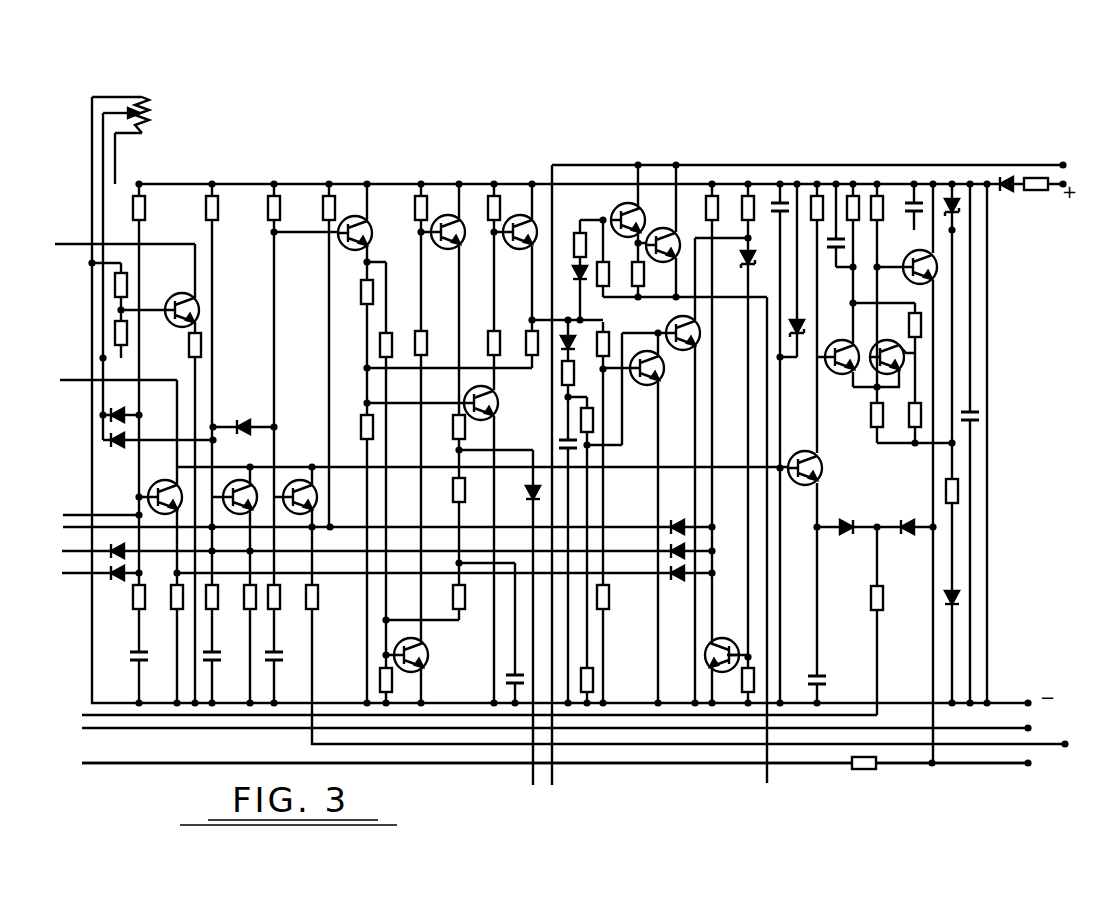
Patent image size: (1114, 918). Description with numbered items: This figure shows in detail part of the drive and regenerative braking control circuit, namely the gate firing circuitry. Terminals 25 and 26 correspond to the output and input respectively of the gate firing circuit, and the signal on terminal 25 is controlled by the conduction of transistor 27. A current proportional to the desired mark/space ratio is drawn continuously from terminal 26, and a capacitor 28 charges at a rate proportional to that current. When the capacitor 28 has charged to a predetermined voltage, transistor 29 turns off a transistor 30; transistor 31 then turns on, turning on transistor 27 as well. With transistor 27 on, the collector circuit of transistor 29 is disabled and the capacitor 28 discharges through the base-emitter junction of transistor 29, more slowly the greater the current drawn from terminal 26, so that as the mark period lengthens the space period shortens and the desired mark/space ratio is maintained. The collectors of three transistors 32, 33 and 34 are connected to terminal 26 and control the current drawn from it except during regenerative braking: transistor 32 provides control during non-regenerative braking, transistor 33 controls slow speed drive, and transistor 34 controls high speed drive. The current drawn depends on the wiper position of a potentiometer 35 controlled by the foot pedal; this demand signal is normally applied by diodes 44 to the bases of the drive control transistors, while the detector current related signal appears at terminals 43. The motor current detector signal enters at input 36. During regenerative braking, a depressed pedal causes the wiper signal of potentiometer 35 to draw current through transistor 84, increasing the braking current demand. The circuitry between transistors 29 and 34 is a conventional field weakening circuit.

The potentiometer 35 is at (153, 109).
The capacitor 28 is at (784, 196).
The transistor 27 is at (909, 257).
The transistor 84 is at (173, 296).
The diodes 44 is at (110, 443).
The transistor 32 is at (162, 480).
The transistor 33 is at (247, 492).
The transistor 34 is at (313, 497).
The terminals 43 is at (62, 552).
The transistor 30 is at (842, 375).
The transistor 31 is at (889, 375).
The terminal 26 is at (780, 478).
The transistor 29 is at (816, 481).
The input 36 is at (1032, 726).
The terminal 25 is at (1033, 766).